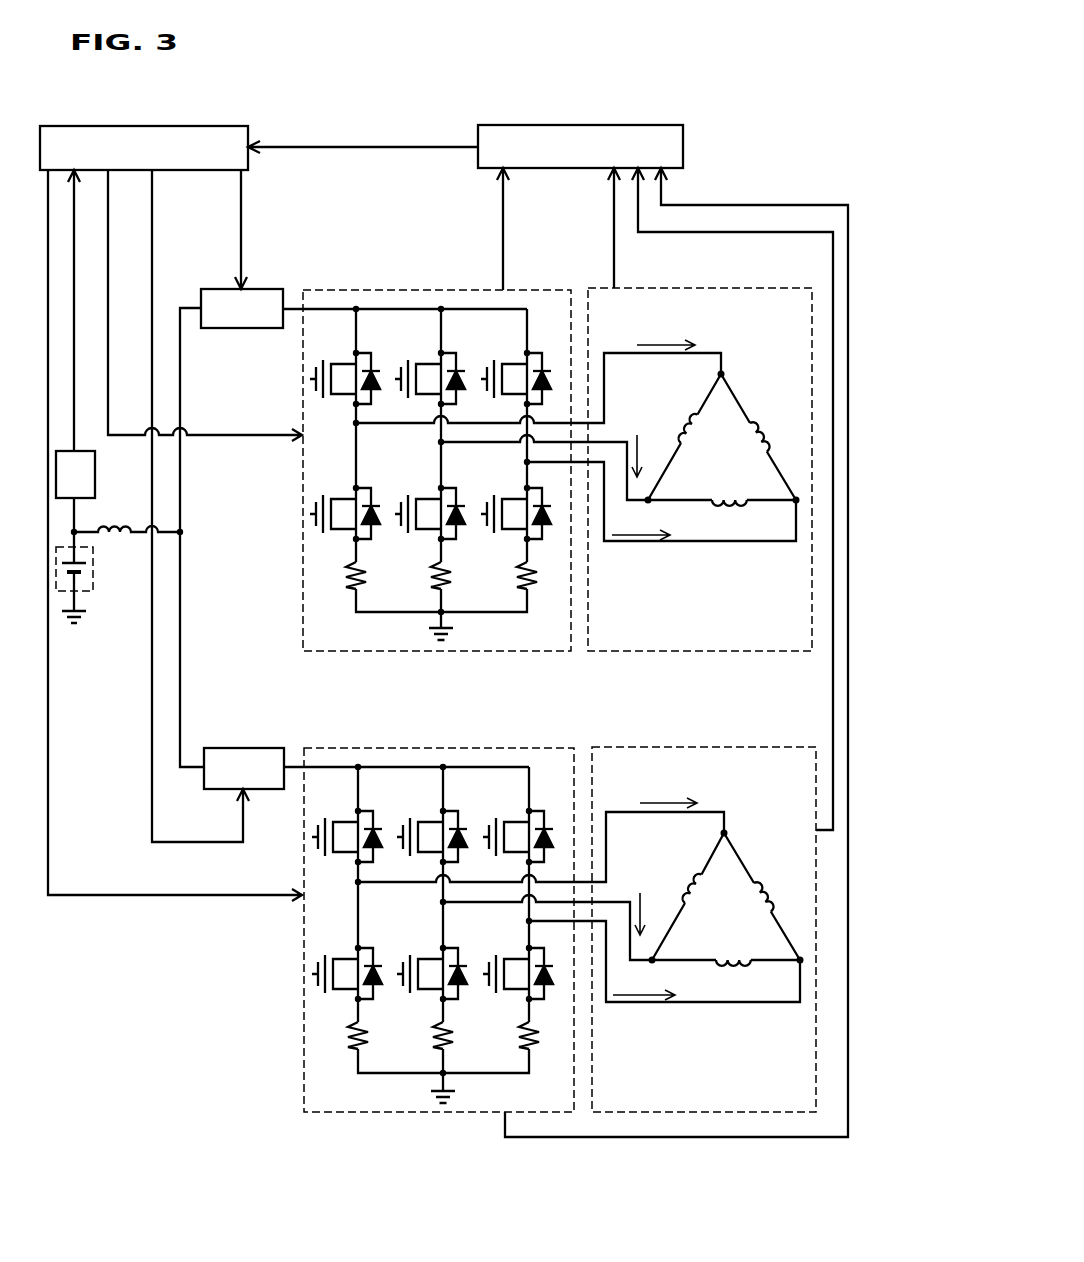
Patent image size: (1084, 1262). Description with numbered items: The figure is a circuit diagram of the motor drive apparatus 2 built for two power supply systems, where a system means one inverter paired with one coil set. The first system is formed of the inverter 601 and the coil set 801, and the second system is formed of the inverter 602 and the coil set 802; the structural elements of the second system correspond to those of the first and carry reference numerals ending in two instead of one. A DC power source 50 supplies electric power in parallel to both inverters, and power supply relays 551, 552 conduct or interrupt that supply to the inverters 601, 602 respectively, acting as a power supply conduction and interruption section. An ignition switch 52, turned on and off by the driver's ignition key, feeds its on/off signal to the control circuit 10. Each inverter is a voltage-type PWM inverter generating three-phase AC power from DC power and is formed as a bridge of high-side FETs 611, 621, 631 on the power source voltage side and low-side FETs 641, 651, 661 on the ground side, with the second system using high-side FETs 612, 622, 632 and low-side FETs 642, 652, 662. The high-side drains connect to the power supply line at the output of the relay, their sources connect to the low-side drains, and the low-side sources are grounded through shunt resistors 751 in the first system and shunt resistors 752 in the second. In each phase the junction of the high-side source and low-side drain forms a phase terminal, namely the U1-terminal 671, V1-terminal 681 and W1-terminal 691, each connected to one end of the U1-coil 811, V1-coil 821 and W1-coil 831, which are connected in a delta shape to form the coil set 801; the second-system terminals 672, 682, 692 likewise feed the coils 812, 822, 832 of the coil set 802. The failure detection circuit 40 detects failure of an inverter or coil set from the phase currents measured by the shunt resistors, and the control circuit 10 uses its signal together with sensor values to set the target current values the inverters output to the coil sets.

The motor drive apparatus 2 is at (707, 106).
The control circuit 10 is at (149, 126).
The failure detection circuit 40 is at (584, 125).
The DC power source 50 is at (88, 593).
The ignition switch 52 is at (96, 470).
The power supply relay 551 is at (264, 289).
The power supply relay 552 is at (264, 748).
The inverter 601 is at (534, 289).
The inverter 602 is at (534, 748).
The high-side FET 611 is at (342, 351).
The high-side FET 621 is at (427, 351).
The high-side FET 631 is at (513, 351).
The low-side FET 641 is at (342, 487).
The low-side FET 651 is at (427, 487).
The low-side FET 661 is at (513, 478).
The high-side FET 612 is at (344, 810).
The high-side FET 622 is at (429, 810).
The high-side FET 632 is at (515, 810).
The low-side FET 642 is at (344, 947).
The low-side FET 652 is at (429, 947).
The low-side FET 662 is at (515, 937).
The U1-terminal 671 is at (356, 423).
The V1-terminal 681 is at (441, 442).
The W1-terminal 691 is at (527, 462).
The U2-terminal 672 is at (358, 882).
The V2-terminal 682 is at (443, 902).
The W2-terminal 692 is at (529, 921).
The shunt resistor 751 is at (364, 566).
The shunt resistor 752 is at (366, 1026).
The coil set 801 is at (726, 289).
The coil set 802 is at (726, 748).
The U1-coil 811 is at (683, 425).
The V1-coil 821 is at (730, 509).
The W1-coil 831 is at (771, 436).
The U2-coil 812 is at (685, 887).
The V2-coil 822 is at (734, 969).
The W2-coil 832 is at (775, 896).